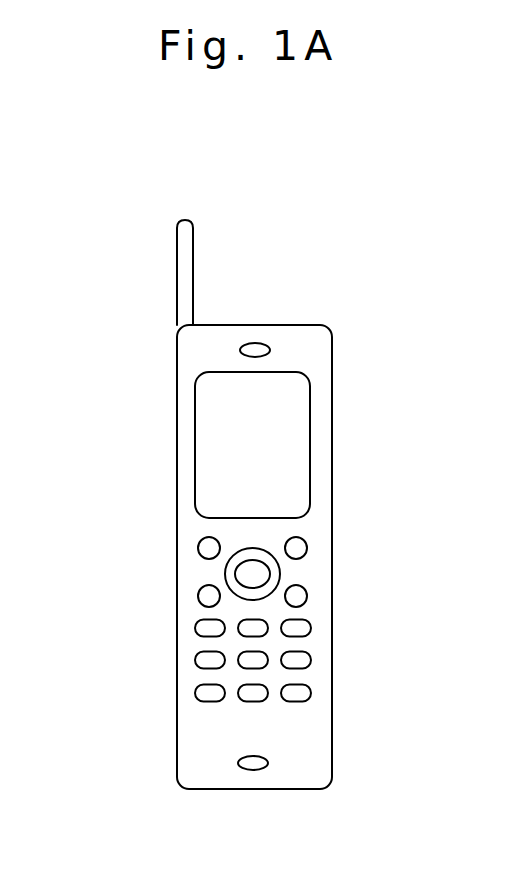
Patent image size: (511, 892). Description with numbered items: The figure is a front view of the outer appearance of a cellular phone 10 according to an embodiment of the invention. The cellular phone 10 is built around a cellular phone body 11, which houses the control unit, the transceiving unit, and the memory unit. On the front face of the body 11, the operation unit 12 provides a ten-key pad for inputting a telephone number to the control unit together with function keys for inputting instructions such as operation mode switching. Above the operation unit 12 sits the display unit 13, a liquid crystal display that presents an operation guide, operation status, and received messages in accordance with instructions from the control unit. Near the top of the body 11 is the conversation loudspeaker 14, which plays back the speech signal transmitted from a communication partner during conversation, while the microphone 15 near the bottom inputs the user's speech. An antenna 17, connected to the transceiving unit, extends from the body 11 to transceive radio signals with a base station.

The cellular phone 10 is at (332, 199).
The cellular phone body 11 is at (332, 397).
The operation unit 12 is at (302, 575).
The display unit 13 is at (195, 428).
The conversation loudspeaker 14 is at (268, 347).
The microphone 15 is at (262, 768).
The antenna 17 is at (177, 287).